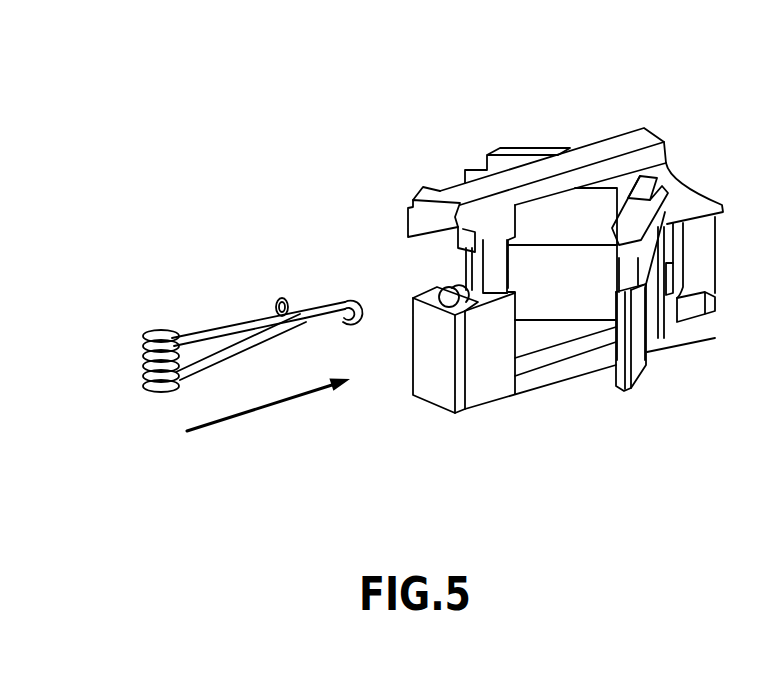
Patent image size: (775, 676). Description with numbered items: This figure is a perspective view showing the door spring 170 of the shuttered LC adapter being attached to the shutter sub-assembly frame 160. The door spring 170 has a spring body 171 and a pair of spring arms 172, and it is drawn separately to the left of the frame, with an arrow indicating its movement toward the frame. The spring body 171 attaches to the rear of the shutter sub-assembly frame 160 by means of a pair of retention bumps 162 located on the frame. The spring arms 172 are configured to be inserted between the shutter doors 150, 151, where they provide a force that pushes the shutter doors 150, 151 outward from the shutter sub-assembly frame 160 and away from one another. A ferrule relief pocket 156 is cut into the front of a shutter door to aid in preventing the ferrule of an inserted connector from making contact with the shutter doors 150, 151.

The shutter door 150 is at (638, 373).
The shutter door 151 is at (532, 150).
The ferrule relief pocket 156 is at (647, 320).
The shutter sub-assembly frame 160 is at (643, 130).
The retention bump 162 is at (463, 303).
The door spring 170 is at (207, 265).
The spring body 171 is at (147, 333).
The spring arms 172 is at (262, 318).